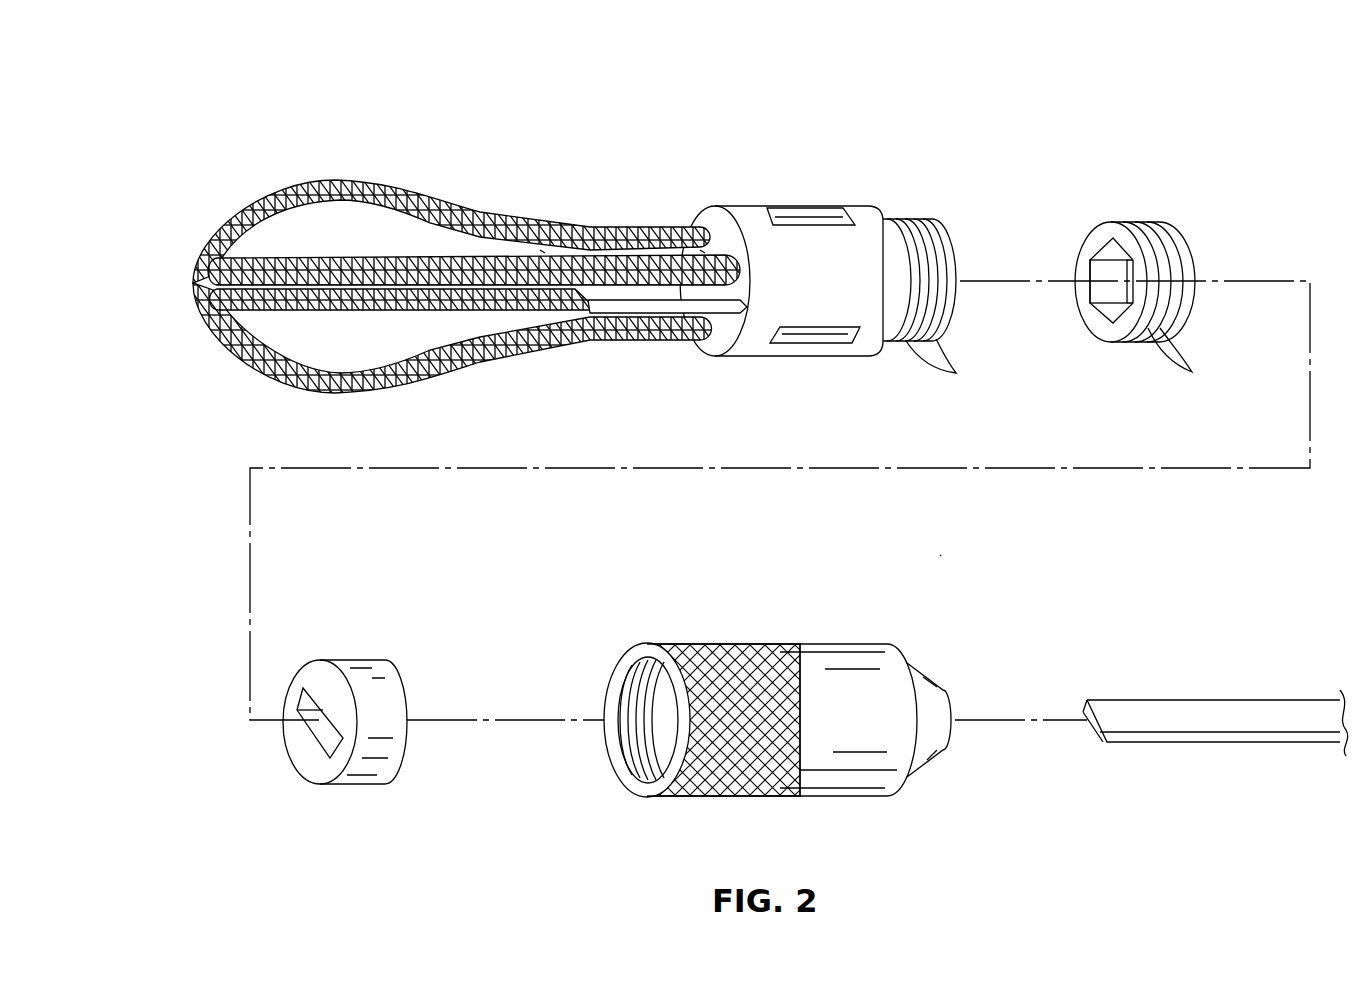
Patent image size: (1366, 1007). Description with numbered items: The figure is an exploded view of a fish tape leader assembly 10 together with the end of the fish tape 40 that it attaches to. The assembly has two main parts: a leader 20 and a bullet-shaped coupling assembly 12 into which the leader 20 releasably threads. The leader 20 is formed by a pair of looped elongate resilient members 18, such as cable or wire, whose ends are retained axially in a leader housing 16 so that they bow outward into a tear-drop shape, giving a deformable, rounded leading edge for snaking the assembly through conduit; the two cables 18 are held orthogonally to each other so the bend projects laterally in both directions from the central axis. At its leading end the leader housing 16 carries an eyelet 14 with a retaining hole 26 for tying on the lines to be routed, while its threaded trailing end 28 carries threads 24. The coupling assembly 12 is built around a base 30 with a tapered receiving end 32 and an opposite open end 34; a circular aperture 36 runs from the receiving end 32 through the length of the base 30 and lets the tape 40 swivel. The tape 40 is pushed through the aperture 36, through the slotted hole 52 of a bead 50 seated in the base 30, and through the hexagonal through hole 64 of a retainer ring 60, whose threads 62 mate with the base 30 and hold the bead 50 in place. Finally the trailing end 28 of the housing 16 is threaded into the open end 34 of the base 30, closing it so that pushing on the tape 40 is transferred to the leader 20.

The fish tape leader assembly 10 is at (152, 75).
The coupling assembly 12 is at (945, 552).
The eyelet 14 is at (655, 320).
The leader housing 16 is at (747, 206).
The looped elongate resilient members 18 is at (298, 300).
The leader 20 is at (238, 178).
The threads 24 is at (951, 366).
The retaining hole 26 is at (633, 250).
The threaded trailing end 28 is at (936, 222).
The base 30 is at (800, 643).
The receiving end 32 is at (937, 700).
The open end 34 is at (702, 645).
The aperture 36 is at (630, 690).
The fish tape 40 is at (1265, 700).
The bead 50 is at (397, 765).
The slotted hole 52 is at (310, 700).
The retainer ring 60 is at (1110, 226).
The threads 62 is at (1188, 359).
The hexagonal through hole 64 is at (1106, 318).